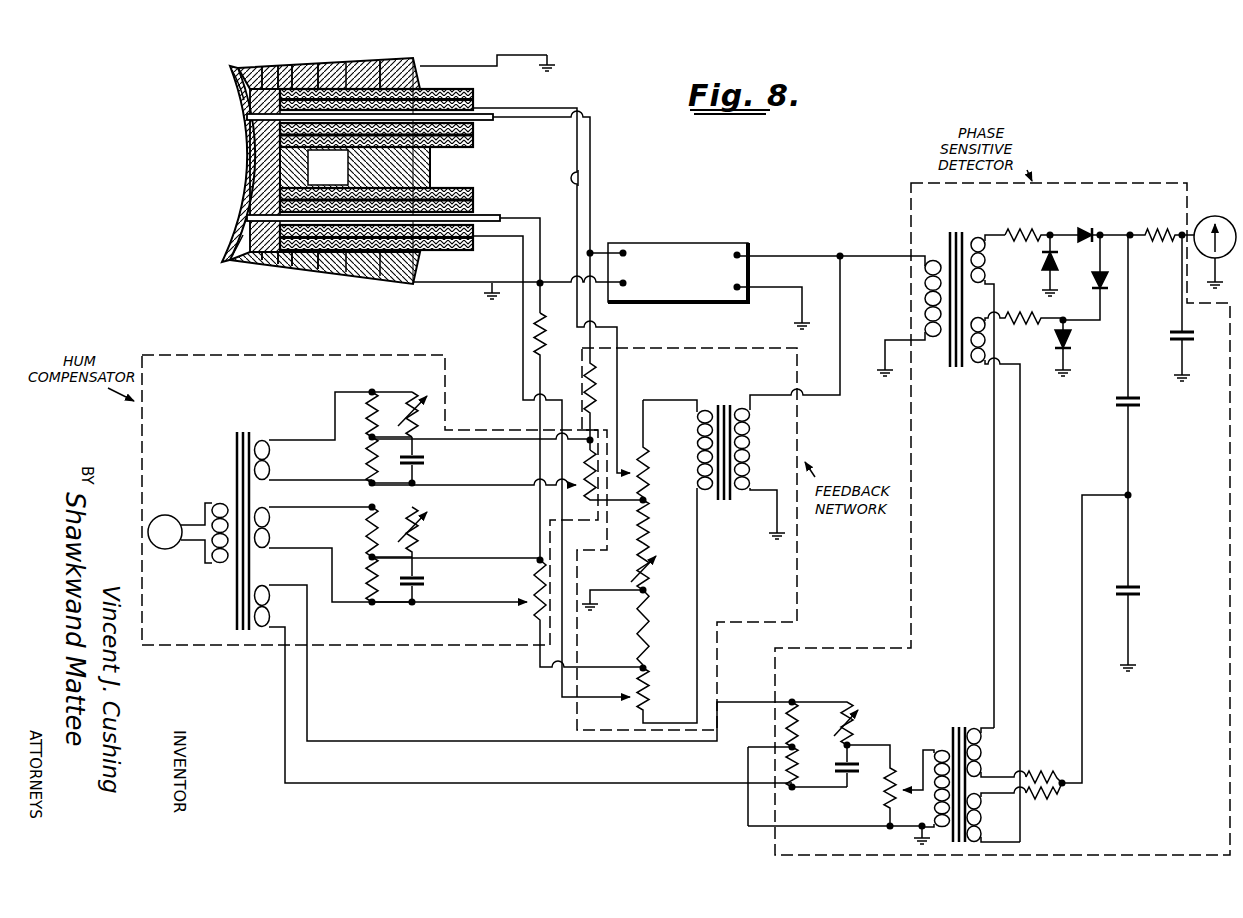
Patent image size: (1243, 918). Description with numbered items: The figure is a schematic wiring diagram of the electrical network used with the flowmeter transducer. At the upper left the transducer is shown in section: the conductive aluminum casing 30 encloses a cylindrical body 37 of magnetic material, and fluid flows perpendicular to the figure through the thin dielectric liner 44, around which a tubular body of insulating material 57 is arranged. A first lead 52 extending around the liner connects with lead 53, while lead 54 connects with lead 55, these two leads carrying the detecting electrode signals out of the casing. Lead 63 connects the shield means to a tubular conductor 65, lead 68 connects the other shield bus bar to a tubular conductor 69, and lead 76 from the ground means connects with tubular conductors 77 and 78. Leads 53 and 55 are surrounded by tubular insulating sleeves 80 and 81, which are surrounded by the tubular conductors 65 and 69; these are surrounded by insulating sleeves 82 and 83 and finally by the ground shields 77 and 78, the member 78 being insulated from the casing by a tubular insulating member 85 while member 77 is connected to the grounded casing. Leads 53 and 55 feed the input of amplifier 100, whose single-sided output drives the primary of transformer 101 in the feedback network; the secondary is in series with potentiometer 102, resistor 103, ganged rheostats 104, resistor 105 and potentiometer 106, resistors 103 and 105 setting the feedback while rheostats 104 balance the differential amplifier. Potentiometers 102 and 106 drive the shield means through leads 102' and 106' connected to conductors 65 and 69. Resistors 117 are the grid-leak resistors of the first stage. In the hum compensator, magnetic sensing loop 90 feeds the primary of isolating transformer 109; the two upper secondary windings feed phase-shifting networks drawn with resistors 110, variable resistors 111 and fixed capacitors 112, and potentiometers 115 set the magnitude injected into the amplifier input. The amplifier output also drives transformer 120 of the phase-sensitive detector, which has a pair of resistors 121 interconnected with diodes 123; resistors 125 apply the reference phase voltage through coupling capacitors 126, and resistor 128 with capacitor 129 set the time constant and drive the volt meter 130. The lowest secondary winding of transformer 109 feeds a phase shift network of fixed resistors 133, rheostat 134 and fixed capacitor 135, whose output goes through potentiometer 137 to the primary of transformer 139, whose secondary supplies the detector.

The casing 30 is at (420, 57).
The cylindrical body 37 is at (374, 60).
The liner 44 is at (248, 166).
The first lead 52 is at (237, 84).
The lead 53 is at (247, 118).
The lead 54 is at (233, 244).
The lead 55 is at (250, 214).
The body of insulating material 57 is at (247, 68).
The lead 63 is at (262, 60).
The tubular conductor 65 is at (306, 62).
The lead 68 is at (253, 267).
The tubular conductor 69 is at (279, 268).
The lead 76 is at (286, 62).
The tubular conductor 77 is at (326, 62).
The tubular conductor 78 is at (318, 270).
The tubular insulating sleeve 80 is at (478, 130).
The tubular insulating sleeve 81 is at (476, 216).
The insulating sleeve 82 is at (476, 98).
The insulating sleeve 83 is at (476, 200).
The tubular insulating member 85 is at (430, 172).
The magnetic sensing loop 90 is at (179, 516).
The amplifier 100 is at (684, 243).
The transformer 101 is at (729, 513).
The potentiometer 102 is at (662, 451).
The lead 102' is at (612, 175).
The resistor 103 is at (650, 521).
The ganged rheostats 104 is at (655, 592).
The resistor 105 is at (650, 652).
The potentiometer 106 is at (667, 606).
The lead 106' is at (549, 466).
The transformer 109 is at (243, 430).
The resistor 110 is at (364, 430).
The variable resistor 111 is at (412, 396).
The fixed capacitors 112 is at (424, 462).
The potentiometers 115 is at (580, 486).
The resistors 117 is at (537, 345).
The transformer 120 is at (957, 230).
The resistors 121 is at (1015, 239).
The diodes 123 is at (1057, 259).
The resistors 125 is at (1042, 781).
The coupling capacitors 126 is at (1133, 407).
The resistor 128 is at (1151, 247).
The capacitor 129 is at (1185, 338).
The volt meter 130 is at (1215, 216).
The fixed resistors 133 is at (800, 737).
The variable resistor 134 is at (852, 731).
The fixed capacitor 135 is at (841, 774).
The potentiometer 137 is at (886, 791).
The transformer 139 is at (960, 722).